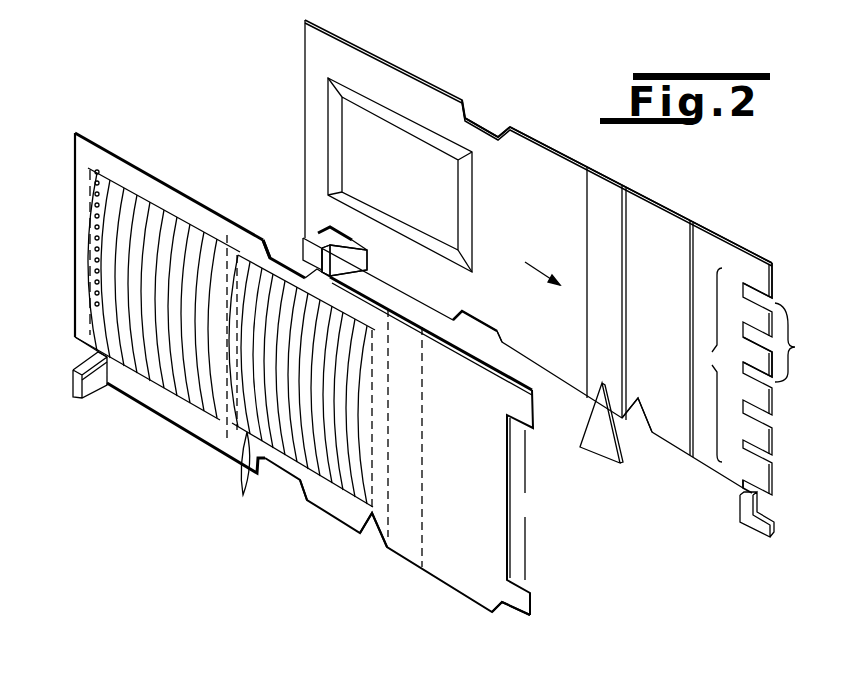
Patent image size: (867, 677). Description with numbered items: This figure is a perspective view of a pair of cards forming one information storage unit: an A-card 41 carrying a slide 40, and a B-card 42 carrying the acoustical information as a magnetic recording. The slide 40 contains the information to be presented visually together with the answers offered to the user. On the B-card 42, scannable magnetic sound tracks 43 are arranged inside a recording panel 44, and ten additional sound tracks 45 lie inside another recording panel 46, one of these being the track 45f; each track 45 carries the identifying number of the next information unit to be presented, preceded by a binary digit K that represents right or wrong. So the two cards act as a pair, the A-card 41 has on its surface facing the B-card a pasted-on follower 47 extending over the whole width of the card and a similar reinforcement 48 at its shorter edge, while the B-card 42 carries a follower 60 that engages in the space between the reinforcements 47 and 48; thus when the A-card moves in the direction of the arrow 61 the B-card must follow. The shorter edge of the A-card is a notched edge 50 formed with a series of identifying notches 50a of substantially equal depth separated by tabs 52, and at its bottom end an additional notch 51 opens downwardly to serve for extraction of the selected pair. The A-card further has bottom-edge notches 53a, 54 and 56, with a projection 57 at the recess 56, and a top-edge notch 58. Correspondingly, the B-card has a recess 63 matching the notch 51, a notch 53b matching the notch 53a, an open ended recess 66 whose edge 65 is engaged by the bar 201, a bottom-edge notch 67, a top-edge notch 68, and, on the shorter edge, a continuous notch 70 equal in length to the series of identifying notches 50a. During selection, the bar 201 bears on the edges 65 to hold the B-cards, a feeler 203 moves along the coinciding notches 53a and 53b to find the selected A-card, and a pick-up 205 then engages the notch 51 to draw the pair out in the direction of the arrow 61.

The slide 40 is at (390, 130).
The A-card 41 is at (552, 152).
The B-card 42 is at (337, 520).
The magnetic sound tracks 43 is at (250, 480).
The recording panel 44 is at (232, 440).
The additional sound tracks 45 is at (140, 200).
The front arcuate rib 45f is at (163, 218).
The recording panel 46 is at (97, 168).
The follower 47 is at (612, 195).
The reinforcement 48 is at (707, 243).
The notched edge 50 is at (737, 379).
The identifying notches 50a is at (786, 342).
The notch 51 is at (740, 483).
The tabs 52 is at (753, 318).
The notch 53a is at (637, 418).
The notch 53b is at (372, 530).
The notch 54 is at (497, 336).
The notch 56 is at (350, 264).
The projection 57 is at (318, 236).
The notch 58 is at (488, 128).
The follower 60 is at (428, 318).
The arrow 61 is at (543, 287).
The recess 63 is at (495, 613).
The edges 65 is at (107, 388).
The open ended recess 66 is at (80, 370).
The notch 67 is at (297, 482).
The notch 68 is at (268, 247).
The continuous notch 70 is at (529, 505).
The bar 201 is at (88, 400).
The feeler 203 is at (583, 448).
The pick-up 205 is at (748, 538).
The binary digit K is at (73, 347).